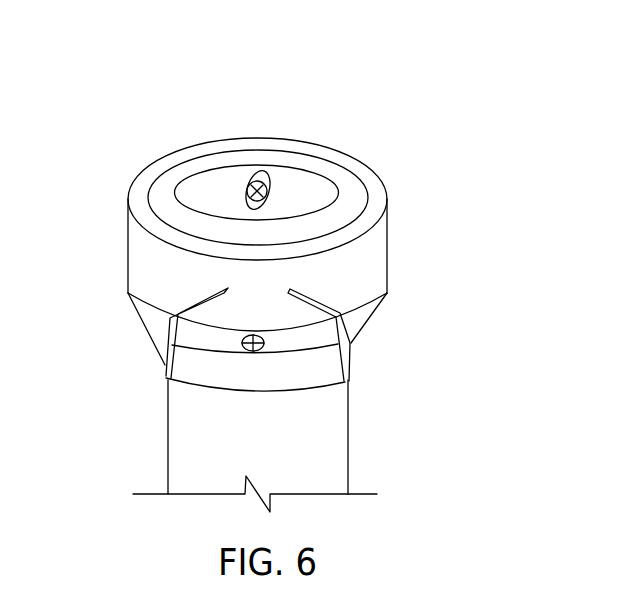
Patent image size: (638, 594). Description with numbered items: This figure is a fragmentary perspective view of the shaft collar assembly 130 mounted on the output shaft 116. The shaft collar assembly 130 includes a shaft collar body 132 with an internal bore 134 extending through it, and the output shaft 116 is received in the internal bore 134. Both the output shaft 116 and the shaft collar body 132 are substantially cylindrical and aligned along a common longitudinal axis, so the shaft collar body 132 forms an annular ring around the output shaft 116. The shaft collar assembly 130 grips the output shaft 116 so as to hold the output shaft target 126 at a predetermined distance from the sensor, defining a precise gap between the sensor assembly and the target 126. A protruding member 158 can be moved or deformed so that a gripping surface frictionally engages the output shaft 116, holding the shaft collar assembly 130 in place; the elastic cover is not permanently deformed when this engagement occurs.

The shaft collar assembly 130 is at (396, 68).
The output shaft target 126 is at (373, 197).
The internal bore 134 is at (217, 193).
The shaft collar body 132 is at (368, 277).
The protruding member 158 is at (200, 367).
The output shaft 116 is at (328, 445).